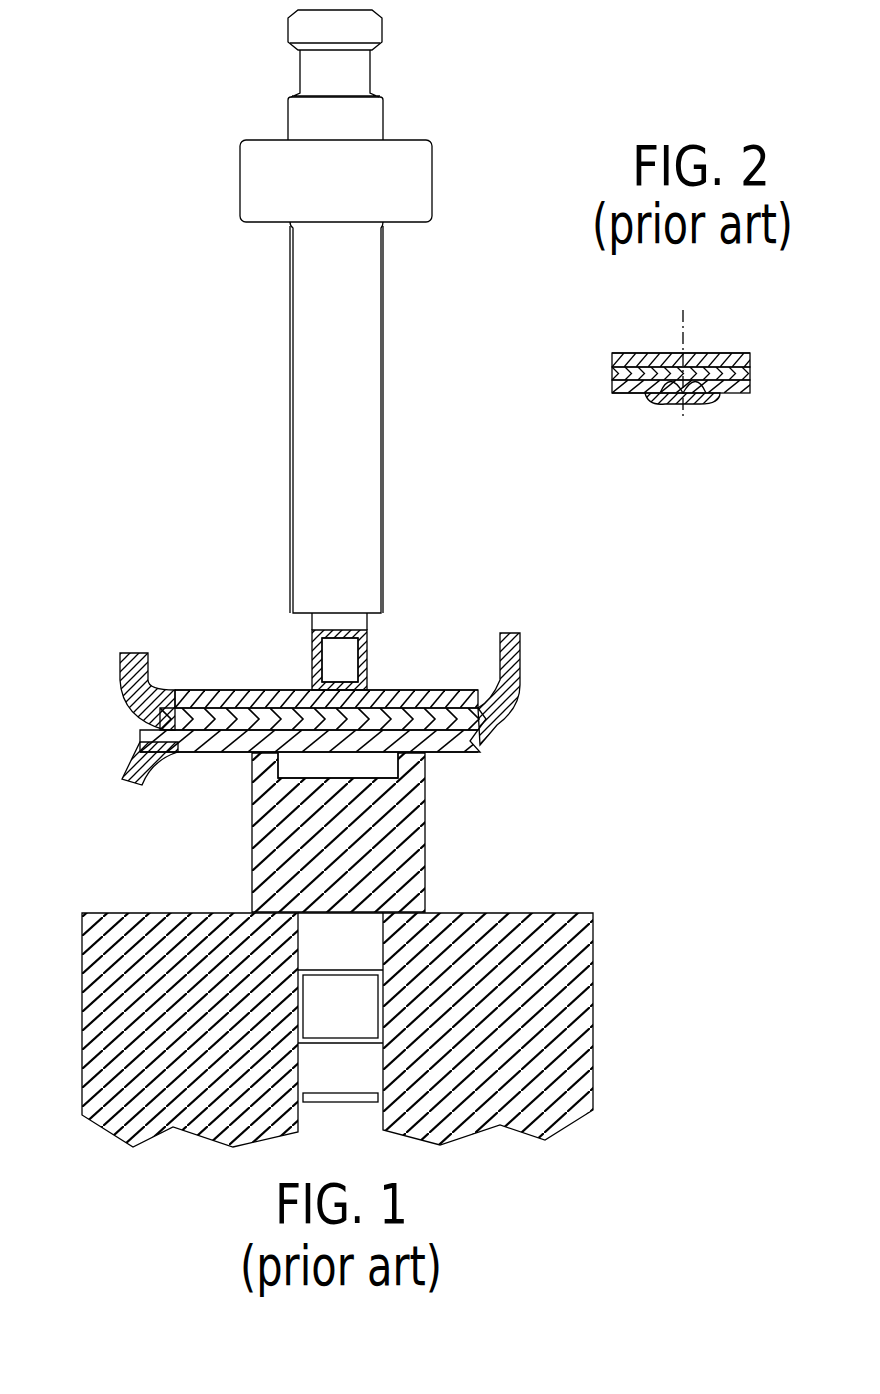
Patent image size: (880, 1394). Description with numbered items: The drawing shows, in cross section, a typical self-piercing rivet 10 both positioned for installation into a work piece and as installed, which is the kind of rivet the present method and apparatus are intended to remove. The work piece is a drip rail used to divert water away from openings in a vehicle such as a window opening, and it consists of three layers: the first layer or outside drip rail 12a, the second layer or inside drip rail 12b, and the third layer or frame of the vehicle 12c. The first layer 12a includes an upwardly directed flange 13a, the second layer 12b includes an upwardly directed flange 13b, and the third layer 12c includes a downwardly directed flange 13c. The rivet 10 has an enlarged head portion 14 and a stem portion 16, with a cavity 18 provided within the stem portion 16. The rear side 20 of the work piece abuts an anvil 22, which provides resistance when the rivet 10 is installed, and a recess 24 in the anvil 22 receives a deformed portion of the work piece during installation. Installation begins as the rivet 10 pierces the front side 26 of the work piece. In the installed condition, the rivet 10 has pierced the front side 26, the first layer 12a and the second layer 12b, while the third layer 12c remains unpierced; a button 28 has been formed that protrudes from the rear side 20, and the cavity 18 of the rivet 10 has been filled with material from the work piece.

In FIG. 1, the self-piercing rivet 10 is at (375, 627).
In FIG. 1, the first layer 12a is at (515, 692).
In FIG. 2, the first layer 12a is at (612, 357).
In FIG. 1, the second layer 12b is at (498, 717).
In FIG. 2, the second layer 12b is at (612, 369).
In FIG. 1, the third layer 12c is at (487, 740).
In FIG. 2, the third layer 12c is at (612, 386).
In FIG. 1, the upwardly directed flange 13a is at (522, 656).
In FIG. 1, the upwardly directed flange 13b is at (121, 690).
In FIG. 1, the downwardly directed flange 13c is at (132, 757).
In FIG. 1, the enlarged head portion 14 is at (312, 628).
In FIG. 1, the stem portion 16 is at (312, 657).
In FIG. 1, the cavity 18 is at (345, 663).
In FIG. 1, the rear side 20 is at (215, 752).
In FIG. 2, the rear side 20 is at (626, 395).
In FIG. 1, the anvil 22 is at (407, 827).
In FIG. 1, the recess 24 is at (368, 768).
In FIG. 1, the front side 26 is at (196, 693).
In FIG. 2, the front side 26 is at (626, 353).
In FIG. 2, the button 28 is at (652, 404).